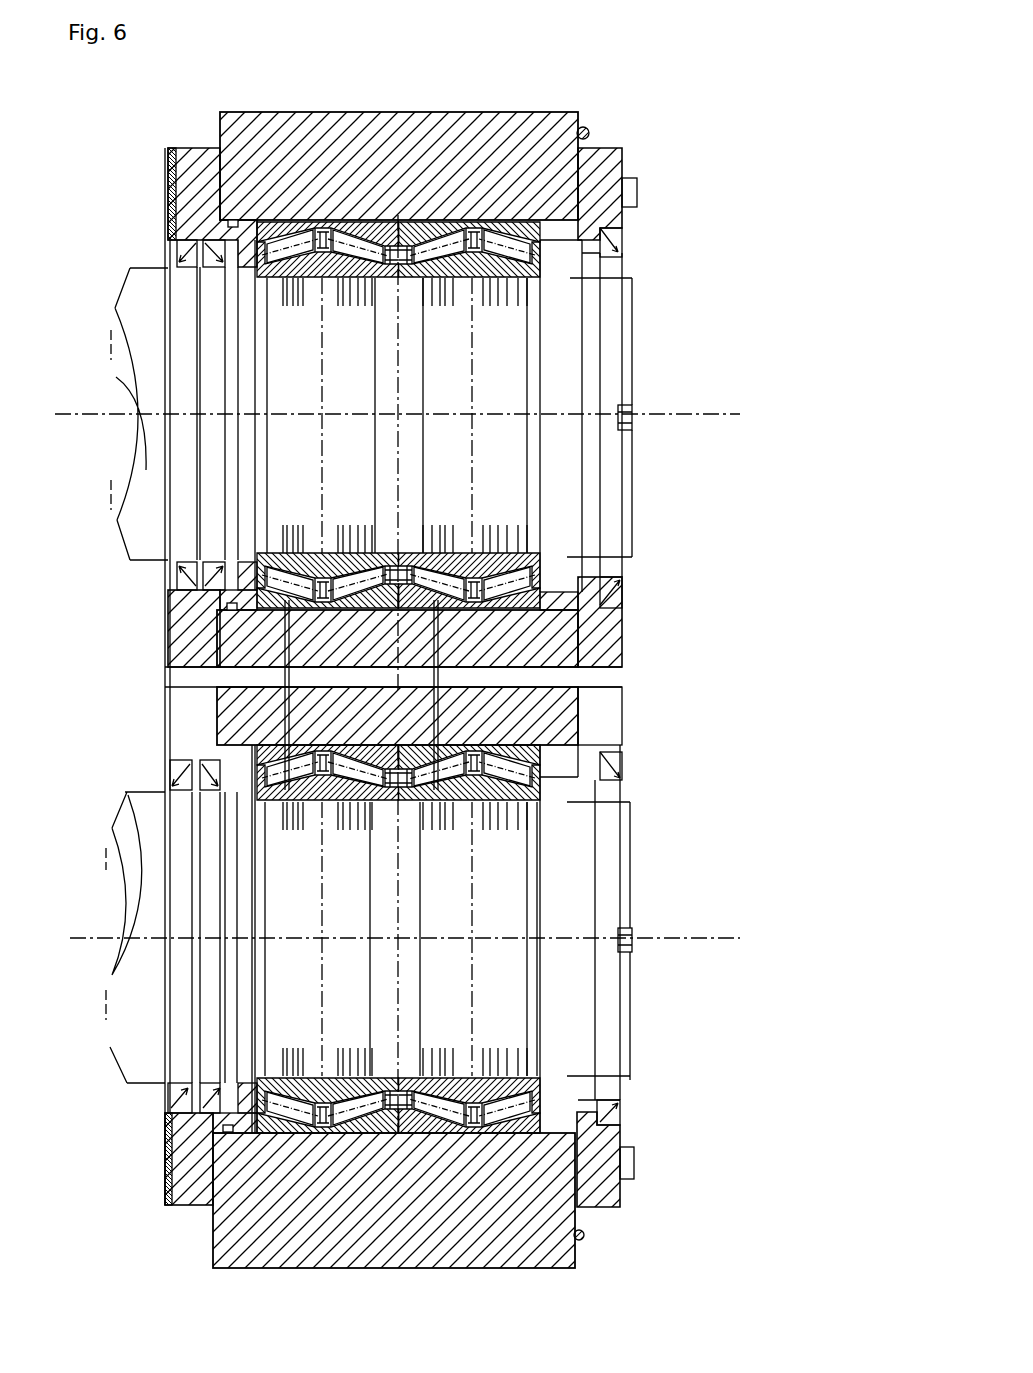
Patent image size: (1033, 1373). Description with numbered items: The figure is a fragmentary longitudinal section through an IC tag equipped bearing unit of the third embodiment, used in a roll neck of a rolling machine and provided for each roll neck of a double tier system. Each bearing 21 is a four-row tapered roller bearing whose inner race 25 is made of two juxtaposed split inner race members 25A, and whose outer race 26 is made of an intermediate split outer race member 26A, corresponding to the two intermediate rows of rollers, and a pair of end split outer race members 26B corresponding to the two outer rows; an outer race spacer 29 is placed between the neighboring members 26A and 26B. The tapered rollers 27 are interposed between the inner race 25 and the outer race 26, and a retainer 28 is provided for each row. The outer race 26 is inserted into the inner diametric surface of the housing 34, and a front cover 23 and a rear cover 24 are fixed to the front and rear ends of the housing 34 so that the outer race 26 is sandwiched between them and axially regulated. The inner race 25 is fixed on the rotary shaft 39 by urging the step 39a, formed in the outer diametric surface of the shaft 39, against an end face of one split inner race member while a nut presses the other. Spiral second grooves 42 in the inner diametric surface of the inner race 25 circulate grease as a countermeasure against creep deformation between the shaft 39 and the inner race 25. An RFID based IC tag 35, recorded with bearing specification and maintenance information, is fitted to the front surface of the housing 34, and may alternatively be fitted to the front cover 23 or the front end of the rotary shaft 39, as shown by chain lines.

The bearing 21 is at (262, 554).
The front cover 23 is at (607, 160).
The rear cover 24 is at (190, 178).
The inner race 25 is at (408, 280).
The split inner race member 25A is at (320, 290).
The outer race 26 is at (385, 148).
The intermediate split outer race member 26A is at (433, 220).
The end split outer race member 26B is at (275, 213).
The rollers 27 is at (270, 218).
The retainer 28 is at (328, 236).
The outer race spacer 29 is at (318, 213).
The housing 34 is at (393, 135).
The IC tag 35 is at (587, 129).
The rotary shaft 39 is at (117, 308).
The step 39a is at (263, 293).
The second groove 42 is at (567, 310).